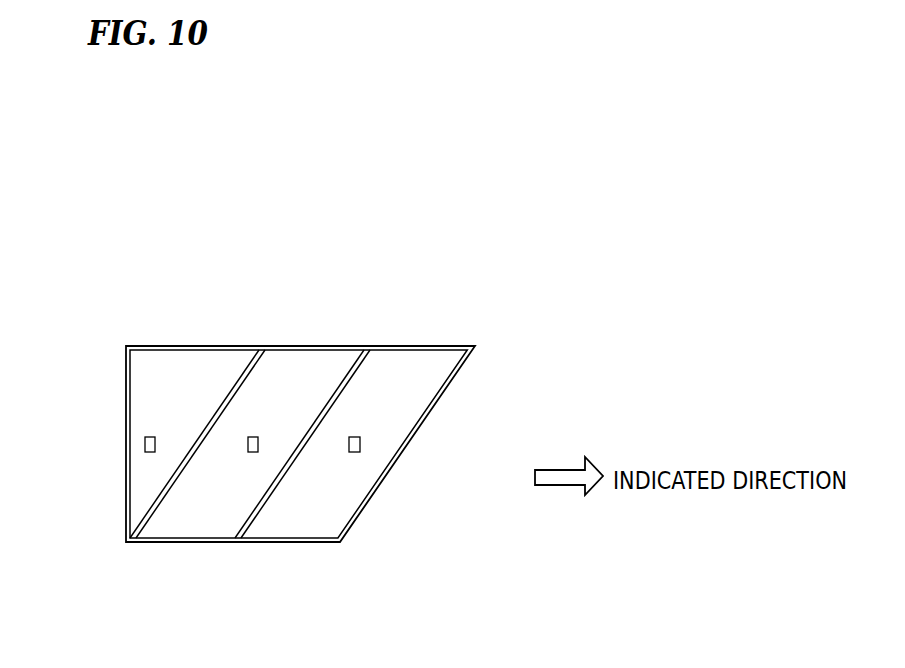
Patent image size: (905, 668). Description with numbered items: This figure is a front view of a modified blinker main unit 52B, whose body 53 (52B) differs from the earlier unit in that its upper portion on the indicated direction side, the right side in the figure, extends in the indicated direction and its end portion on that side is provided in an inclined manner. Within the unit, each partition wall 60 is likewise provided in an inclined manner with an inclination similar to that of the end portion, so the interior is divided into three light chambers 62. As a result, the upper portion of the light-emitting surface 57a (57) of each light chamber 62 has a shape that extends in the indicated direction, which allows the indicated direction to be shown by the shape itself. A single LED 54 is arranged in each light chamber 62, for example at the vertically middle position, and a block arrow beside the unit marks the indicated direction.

The display surface 53 is at (387, 444).
The blinker main unit 52B is at (478, 368).
The light-emitting surface 57a is at (198, 368).
The display portion 57 is at (337, 367).
The partition wall 60 is at (158, 508).
The light chamber 62 is at (176, 398).
The LED 54 is at (144, 444).